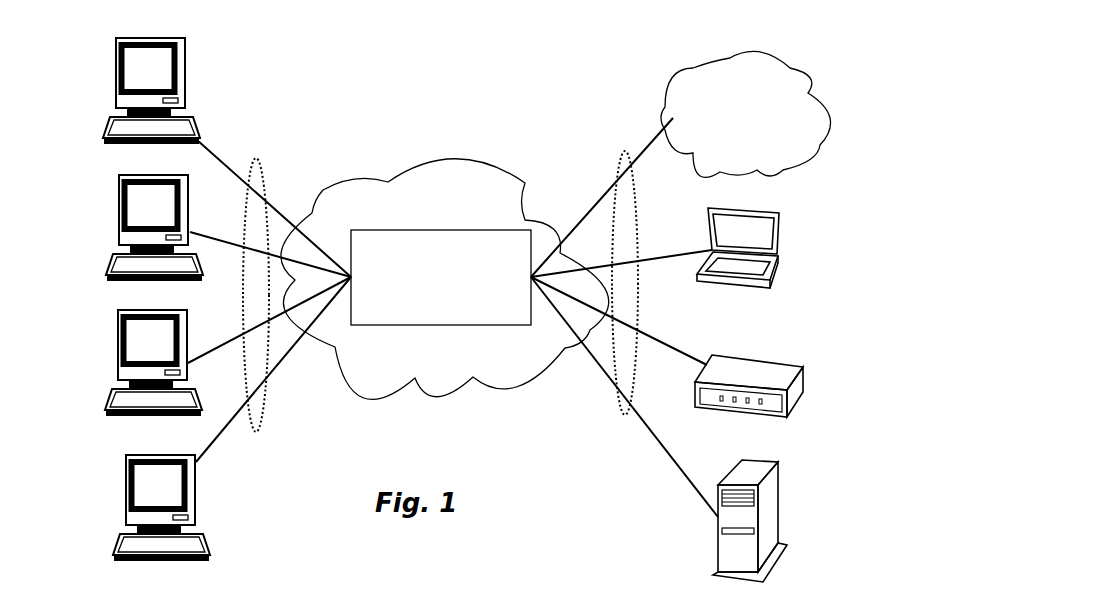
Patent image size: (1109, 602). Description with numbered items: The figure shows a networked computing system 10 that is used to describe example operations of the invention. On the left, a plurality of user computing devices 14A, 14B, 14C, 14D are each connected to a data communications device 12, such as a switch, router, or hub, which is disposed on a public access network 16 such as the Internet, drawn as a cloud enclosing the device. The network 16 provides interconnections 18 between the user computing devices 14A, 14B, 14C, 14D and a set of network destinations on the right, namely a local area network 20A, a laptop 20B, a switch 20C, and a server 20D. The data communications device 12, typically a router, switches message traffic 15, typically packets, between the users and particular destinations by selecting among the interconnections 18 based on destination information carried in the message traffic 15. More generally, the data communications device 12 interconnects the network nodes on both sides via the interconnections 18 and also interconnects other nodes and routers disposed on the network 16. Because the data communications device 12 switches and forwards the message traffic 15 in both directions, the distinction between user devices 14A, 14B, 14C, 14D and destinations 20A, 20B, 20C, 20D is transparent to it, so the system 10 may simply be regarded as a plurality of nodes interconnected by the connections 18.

The networked computing system 10 is at (536, 110).
The data communications device 12 is at (425, 325).
The user computing device 14A is at (117, 93).
The user computing device 14B is at (108, 277).
The user computing device 14C is at (105, 411).
The user computing device 14D is at (113, 556).
The message traffic 15 is at (310, 181).
The public access network 16 is at (437, 397).
The interconnections 18 is at (255, 433).
The local area network 20A is at (828, 117).
The laptop 20B is at (780, 250).
The switch 20C is at (747, 358).
The server 20D is at (780, 520).